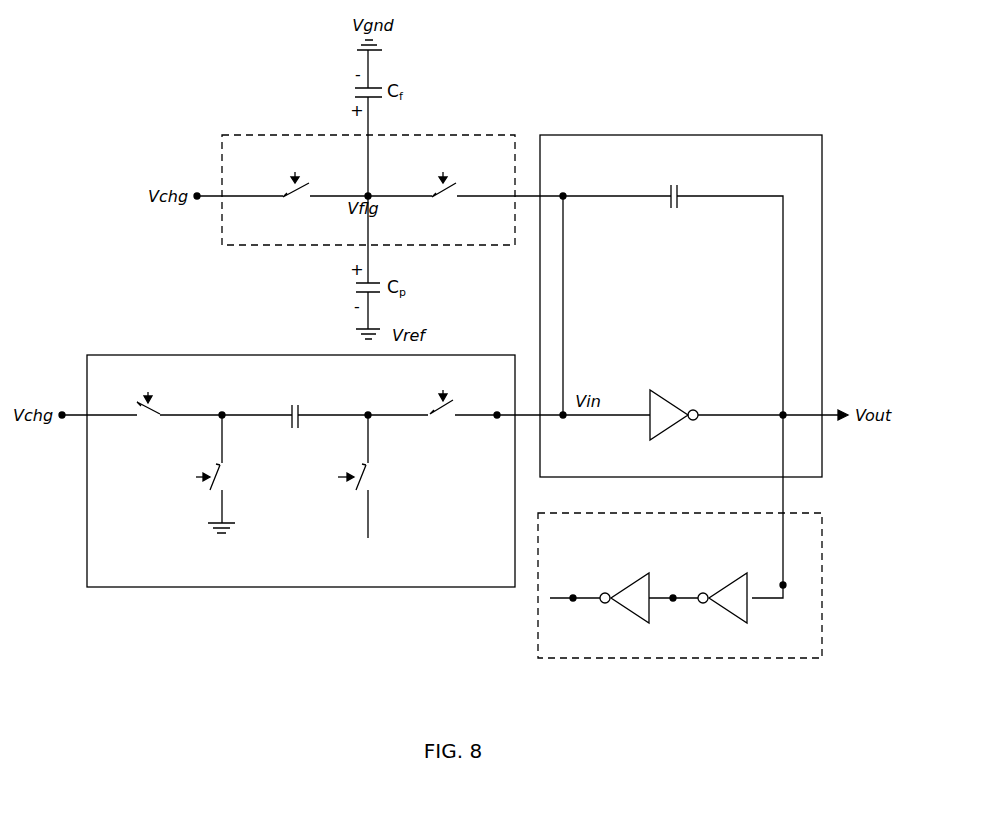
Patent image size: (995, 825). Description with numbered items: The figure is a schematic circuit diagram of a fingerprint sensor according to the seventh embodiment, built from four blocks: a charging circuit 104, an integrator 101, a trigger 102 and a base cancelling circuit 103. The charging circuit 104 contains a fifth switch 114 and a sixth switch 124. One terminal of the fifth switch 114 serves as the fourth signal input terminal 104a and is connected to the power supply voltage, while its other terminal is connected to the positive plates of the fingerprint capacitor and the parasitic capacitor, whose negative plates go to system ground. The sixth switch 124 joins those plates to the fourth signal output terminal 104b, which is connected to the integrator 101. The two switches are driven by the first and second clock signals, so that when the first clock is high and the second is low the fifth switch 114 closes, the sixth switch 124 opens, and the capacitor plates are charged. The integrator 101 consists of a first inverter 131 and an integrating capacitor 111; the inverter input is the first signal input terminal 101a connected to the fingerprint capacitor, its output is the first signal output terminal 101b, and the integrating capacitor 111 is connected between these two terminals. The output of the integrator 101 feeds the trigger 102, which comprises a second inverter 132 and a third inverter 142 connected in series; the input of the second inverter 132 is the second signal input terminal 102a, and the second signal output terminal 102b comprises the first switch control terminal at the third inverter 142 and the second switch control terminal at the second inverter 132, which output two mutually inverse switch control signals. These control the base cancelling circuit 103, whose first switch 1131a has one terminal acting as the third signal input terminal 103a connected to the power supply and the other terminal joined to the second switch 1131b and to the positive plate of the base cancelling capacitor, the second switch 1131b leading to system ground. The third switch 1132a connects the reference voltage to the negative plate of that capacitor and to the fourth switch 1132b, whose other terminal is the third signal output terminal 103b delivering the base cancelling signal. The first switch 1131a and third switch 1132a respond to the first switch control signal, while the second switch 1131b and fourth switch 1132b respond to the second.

The integrator 101 is at (733, 135).
The first signal input terminal 101a is at (567, 423).
The first signal output terminal 101b is at (769, 409).
The trigger 102 is at (662, 658).
The second signal input terminal 102a is at (769, 576).
The second signal output terminal 102b is at (625, 605).
The base cancelling circuit 103 is at (282, 587).
The third signal input terminal 103a is at (72, 408).
The third signal output terminal 103b is at (492, 424).
The charging circuit 104 is at (440, 135).
The fourth signal input terminal 104a is at (198, 188).
The fourth signal output terminal 104b is at (560, 188).
The integrating capacitor 111 is at (673, 212).
The fifth switch 114 is at (282, 187).
The sixth switch 124 is at (430, 187).
The first inverter 131 is at (660, 395).
The second inverter 132 is at (735, 570).
The third inverter 142 is at (637, 570).
The first switch 1131a is at (167, 407).
The second switch 1131b is at (207, 486).
The third switch 1132a is at (357, 486).
The fourth switch 1132b is at (423, 406).